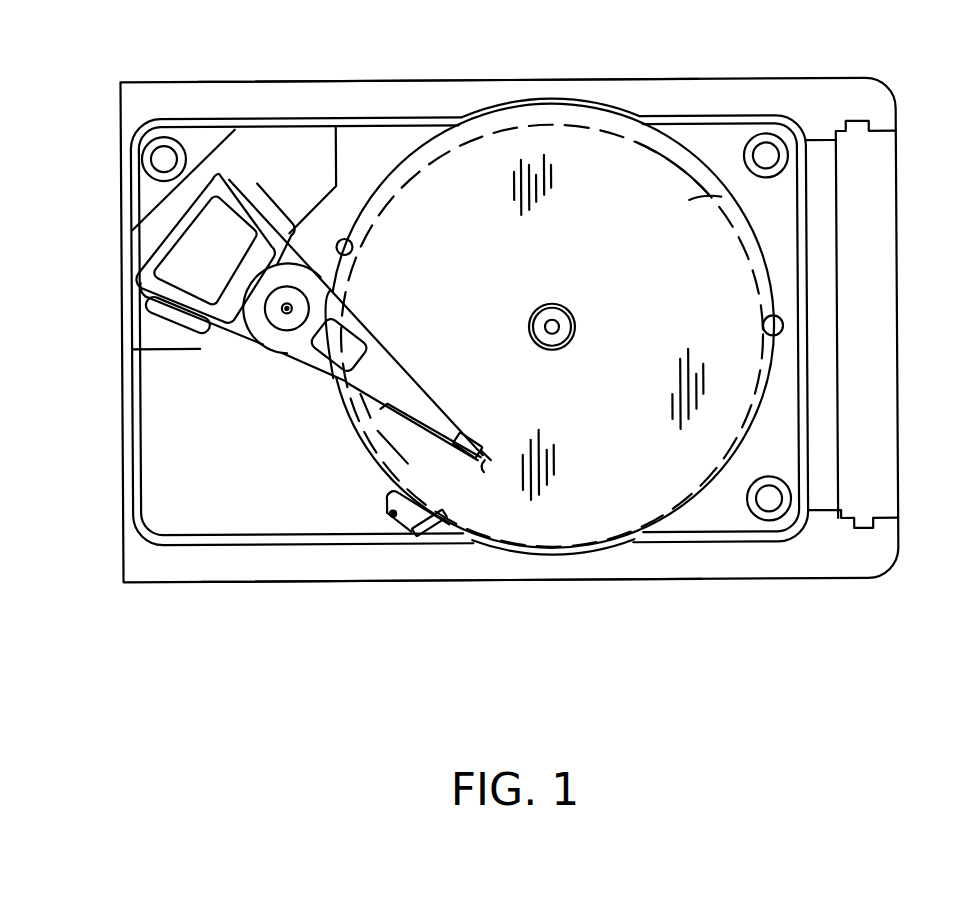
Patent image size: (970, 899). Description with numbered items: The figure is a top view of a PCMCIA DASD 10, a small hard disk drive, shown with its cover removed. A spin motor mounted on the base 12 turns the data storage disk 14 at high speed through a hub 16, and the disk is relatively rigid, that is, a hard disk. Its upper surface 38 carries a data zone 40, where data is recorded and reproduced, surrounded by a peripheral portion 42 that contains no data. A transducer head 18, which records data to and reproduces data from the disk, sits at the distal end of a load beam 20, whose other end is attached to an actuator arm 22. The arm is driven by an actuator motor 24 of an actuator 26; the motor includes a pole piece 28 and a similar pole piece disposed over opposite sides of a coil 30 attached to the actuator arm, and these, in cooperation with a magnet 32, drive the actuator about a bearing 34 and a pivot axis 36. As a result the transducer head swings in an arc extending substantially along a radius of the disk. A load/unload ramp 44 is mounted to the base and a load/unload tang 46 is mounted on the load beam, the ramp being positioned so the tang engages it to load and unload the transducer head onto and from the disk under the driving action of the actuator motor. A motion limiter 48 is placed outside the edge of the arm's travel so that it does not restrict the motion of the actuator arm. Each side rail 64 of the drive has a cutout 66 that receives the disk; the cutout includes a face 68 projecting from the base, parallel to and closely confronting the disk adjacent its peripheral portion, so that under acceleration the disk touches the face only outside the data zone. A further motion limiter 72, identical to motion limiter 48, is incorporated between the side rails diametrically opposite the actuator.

The PCMCIA DASD 10 is at (566, 598).
The base 12 is at (232, 482).
The data storage disk 14 is at (770, 262).
The hub 16 is at (557, 309).
The transducer head 18 is at (462, 454).
The load beam 20 is at (418, 385).
The actuator arm 22 is at (355, 320).
The actuator motor 24 is at (150, 357).
The actuator 26 is at (300, 400).
The pole piece 28 is at (150, 334).
The coil 30 is at (254, 233).
The magnet 32 is at (205, 327).
The bearing 34 is at (306, 309).
The pivot axis 36 is at (285, 314).
The surface 38 is at (645, 235).
The data zone 40 is at (722, 198).
The peripheral portion 42 is at (707, 178).
The load/unload ramp 44 is at (392, 513).
The load/unload tang 46 is at (483, 472).
The motion limiter 48 is at (344, 238).
The side rail 64 is at (262, 80).
The cutout 66 is at (518, 101).
The face 68 is at (560, 127).
The motion limiter 72 is at (784, 327).